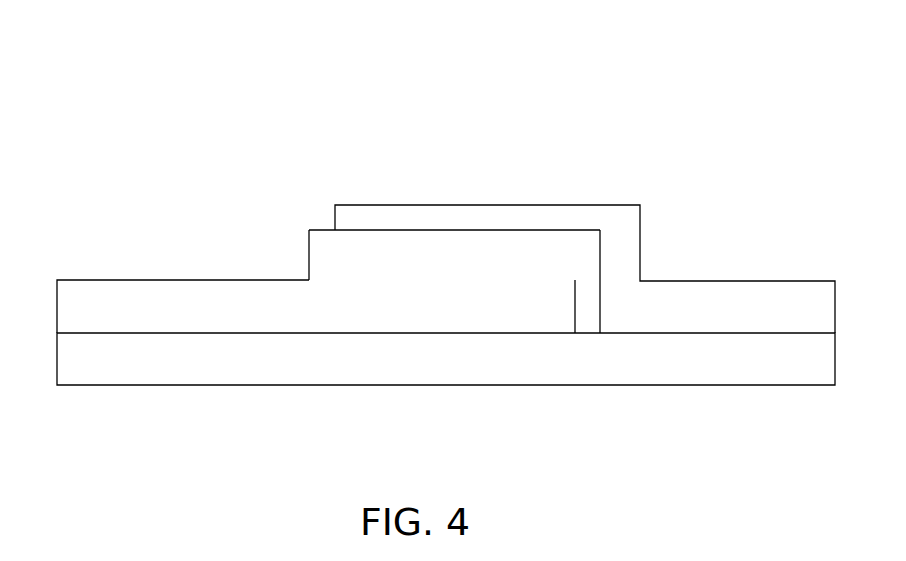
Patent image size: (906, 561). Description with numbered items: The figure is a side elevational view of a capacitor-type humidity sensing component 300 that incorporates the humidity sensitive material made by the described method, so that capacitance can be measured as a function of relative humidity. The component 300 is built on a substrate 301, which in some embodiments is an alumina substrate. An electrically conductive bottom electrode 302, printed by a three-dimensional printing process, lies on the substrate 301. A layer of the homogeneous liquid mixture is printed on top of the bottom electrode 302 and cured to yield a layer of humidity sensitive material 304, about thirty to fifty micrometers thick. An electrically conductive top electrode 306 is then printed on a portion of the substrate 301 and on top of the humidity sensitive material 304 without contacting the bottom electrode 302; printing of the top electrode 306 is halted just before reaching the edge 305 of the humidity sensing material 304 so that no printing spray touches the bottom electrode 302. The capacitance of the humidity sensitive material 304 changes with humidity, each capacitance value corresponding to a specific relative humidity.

The humidity sensing component 300 is at (272, 92).
The substrate 301 is at (445, 386).
The bottom electrode 302 is at (124, 280).
The layer of humidity sensitive material 304 is at (308, 258).
The edge of humidity sensing material 305 is at (309, 230).
The top electrode 306 is at (486, 205).